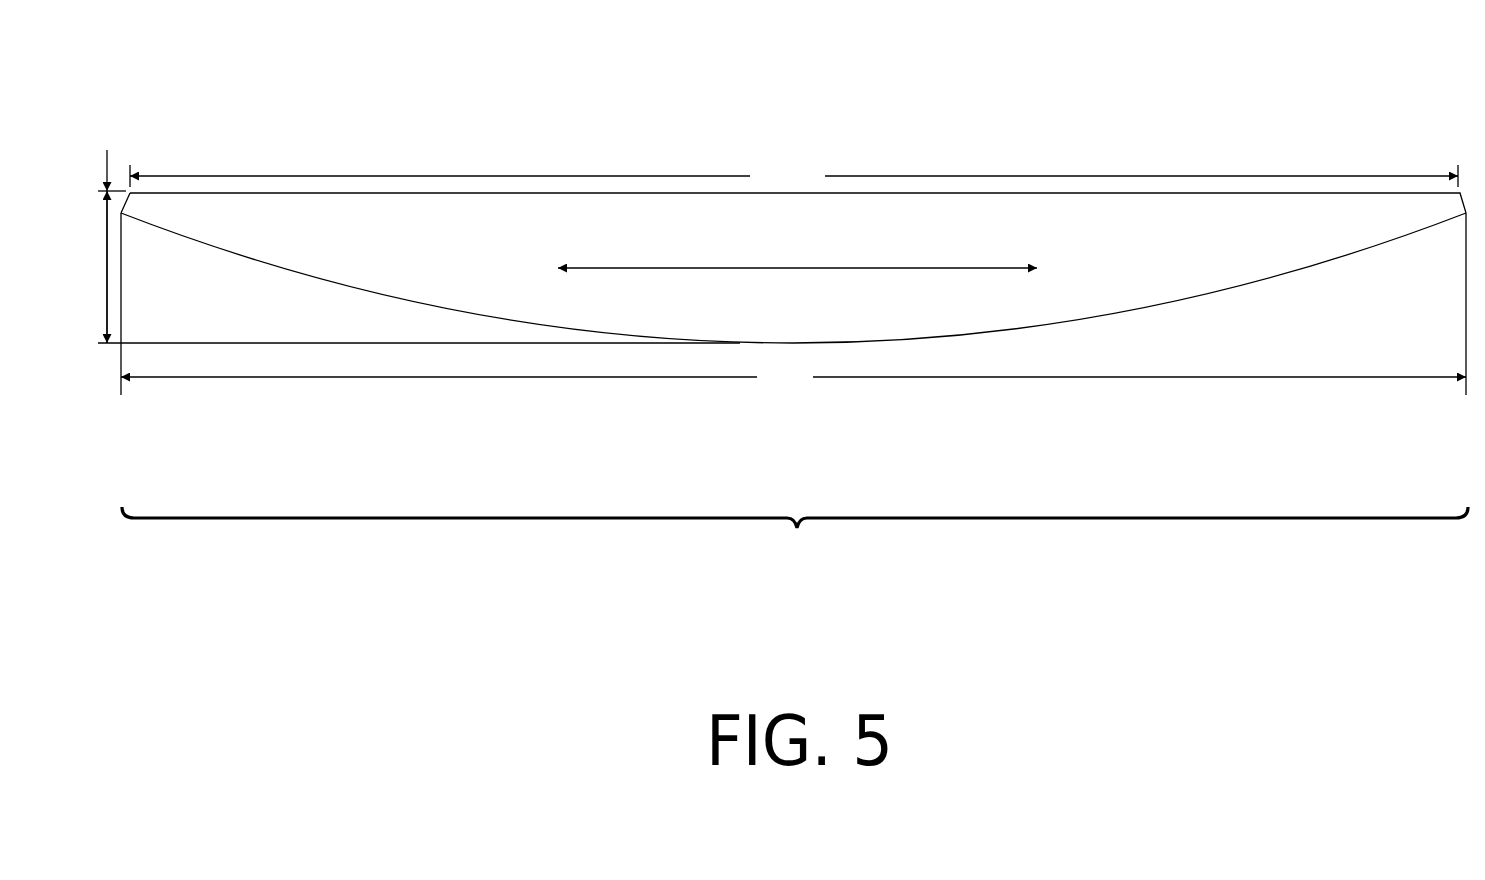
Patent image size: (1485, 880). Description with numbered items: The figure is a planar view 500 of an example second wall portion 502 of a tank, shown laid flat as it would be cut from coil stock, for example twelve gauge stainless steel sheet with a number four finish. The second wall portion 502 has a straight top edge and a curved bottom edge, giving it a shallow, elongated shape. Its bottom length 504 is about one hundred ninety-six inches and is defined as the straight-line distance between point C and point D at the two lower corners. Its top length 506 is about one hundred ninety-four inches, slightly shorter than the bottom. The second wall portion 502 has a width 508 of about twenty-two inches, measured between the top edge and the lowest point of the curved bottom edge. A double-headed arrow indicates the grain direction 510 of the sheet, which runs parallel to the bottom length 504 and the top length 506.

The planar view 500 is at (795, 531).
The second wall portion 502 is at (174, 66).
The bottom length 504 is at (793, 304).
The top length 506 is at (794, 176).
The width 508 is at (107, 150).
The grain direction 510 is at (847, 267).
The point C is at (123, 216).
The point D is at (1465, 216).